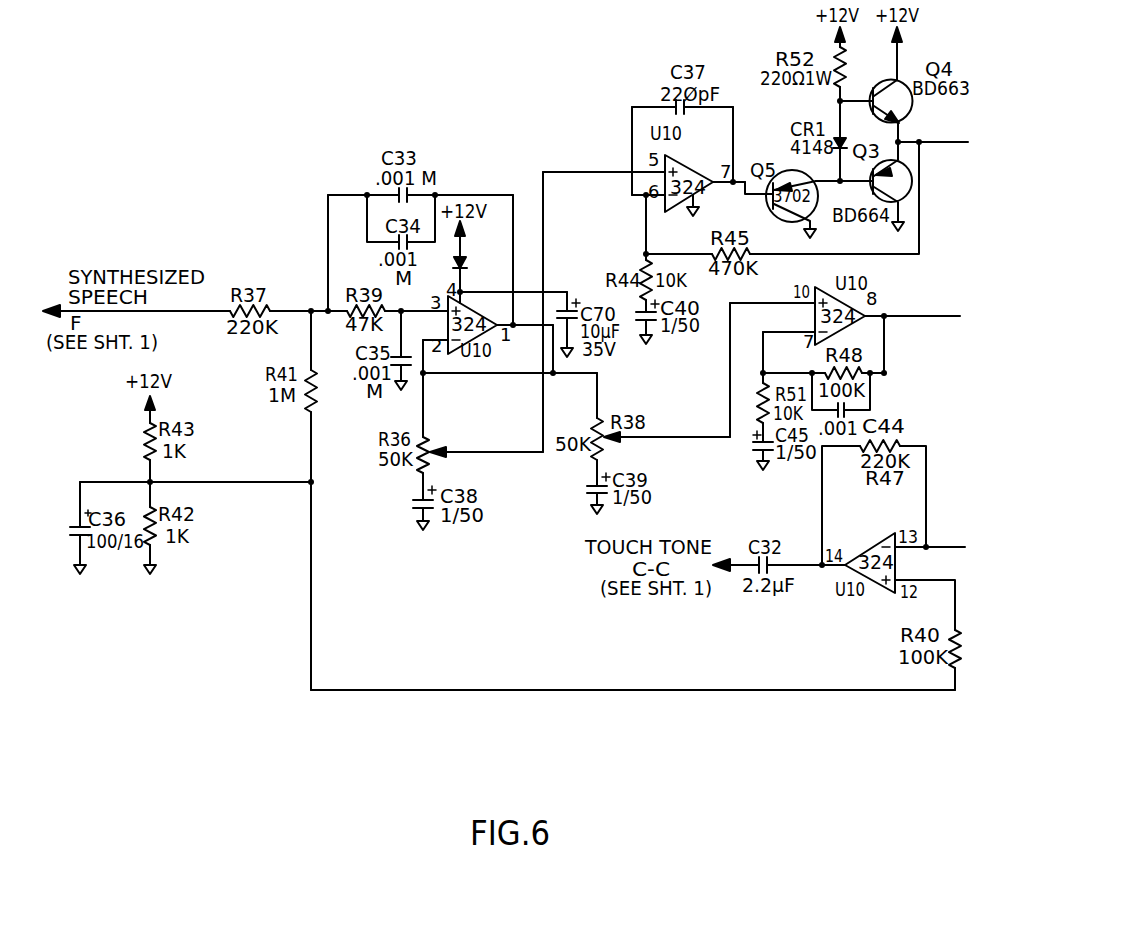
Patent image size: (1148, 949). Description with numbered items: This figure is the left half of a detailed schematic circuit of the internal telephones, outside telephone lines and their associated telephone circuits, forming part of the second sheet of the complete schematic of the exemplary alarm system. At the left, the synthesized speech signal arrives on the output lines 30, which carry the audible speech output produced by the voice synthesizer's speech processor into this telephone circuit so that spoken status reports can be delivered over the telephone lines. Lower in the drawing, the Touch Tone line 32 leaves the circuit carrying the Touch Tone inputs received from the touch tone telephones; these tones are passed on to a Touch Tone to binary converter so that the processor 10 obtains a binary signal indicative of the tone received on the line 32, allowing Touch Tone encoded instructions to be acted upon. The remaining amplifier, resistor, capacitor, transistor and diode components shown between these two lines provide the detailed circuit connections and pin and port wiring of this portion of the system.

The output lines 30 is at (175, 312).
The line 32 is at (741, 567).
The processor 10 is at (484, 262).